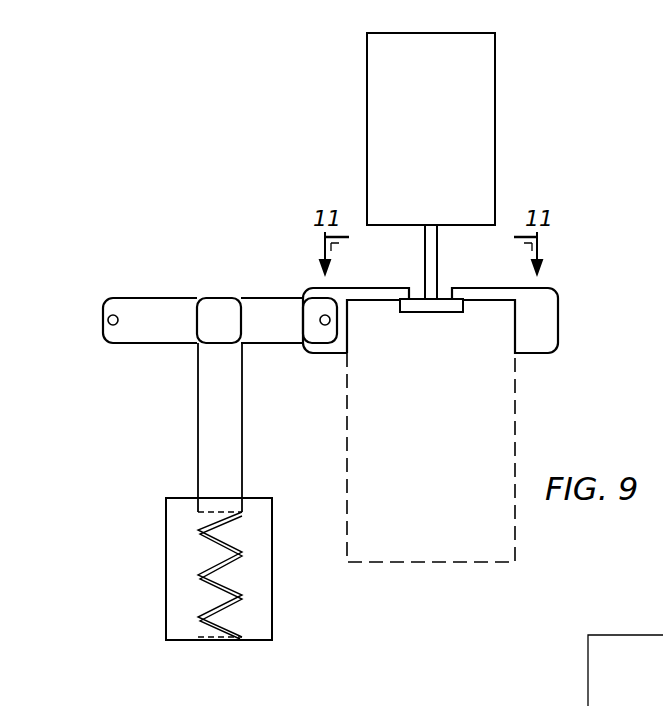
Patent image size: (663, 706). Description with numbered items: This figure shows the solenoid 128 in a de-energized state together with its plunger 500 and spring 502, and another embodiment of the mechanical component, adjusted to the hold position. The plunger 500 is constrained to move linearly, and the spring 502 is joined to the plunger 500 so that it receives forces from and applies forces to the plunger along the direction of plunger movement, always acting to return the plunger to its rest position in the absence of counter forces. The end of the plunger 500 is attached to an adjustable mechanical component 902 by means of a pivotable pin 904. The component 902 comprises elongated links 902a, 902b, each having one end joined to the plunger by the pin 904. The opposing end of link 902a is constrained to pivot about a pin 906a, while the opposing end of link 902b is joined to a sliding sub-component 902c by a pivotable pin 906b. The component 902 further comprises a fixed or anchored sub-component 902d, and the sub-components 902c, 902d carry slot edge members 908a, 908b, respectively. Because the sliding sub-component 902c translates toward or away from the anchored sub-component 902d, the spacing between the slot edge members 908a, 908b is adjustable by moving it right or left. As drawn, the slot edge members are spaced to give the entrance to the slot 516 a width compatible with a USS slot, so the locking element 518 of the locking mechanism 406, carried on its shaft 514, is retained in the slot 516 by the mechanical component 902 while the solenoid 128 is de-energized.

The locking mechanism 406 is at (451, 142).
The rod / shaft 514 is at (424, 263).
The locking element 518 is at (424, 313).
The slot 516 is at (450, 472).
The adjustable mechanical component 902 is at (214, 222).
The elongated link 902a is at (162, 344).
The elongated link 902b is at (283, 344).
The sliding sub-component 902c is at (330, 356).
The anchored sub-component 902d is at (558, 322).
The pivotable pin 904 is at (218, 314).
The pin 906a is at (108, 320).
The pivotable pin 906b is at (322, 316).
The slot edge member 908a is at (378, 301).
The slot edge member 908b is at (489, 301).
The plunger 500 is at (198, 432).
The solenoid 128 is at (166, 568).
The spring 502 is at (236, 580).